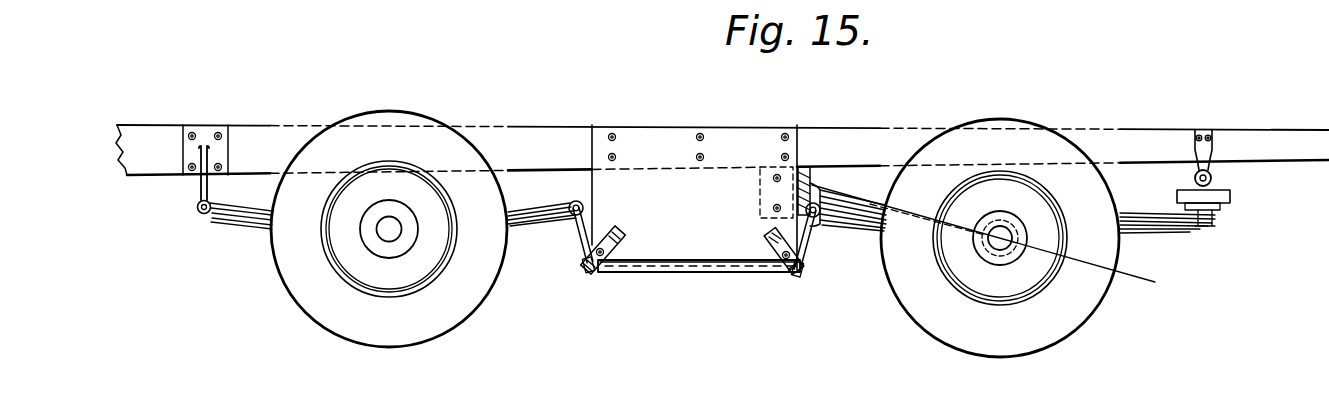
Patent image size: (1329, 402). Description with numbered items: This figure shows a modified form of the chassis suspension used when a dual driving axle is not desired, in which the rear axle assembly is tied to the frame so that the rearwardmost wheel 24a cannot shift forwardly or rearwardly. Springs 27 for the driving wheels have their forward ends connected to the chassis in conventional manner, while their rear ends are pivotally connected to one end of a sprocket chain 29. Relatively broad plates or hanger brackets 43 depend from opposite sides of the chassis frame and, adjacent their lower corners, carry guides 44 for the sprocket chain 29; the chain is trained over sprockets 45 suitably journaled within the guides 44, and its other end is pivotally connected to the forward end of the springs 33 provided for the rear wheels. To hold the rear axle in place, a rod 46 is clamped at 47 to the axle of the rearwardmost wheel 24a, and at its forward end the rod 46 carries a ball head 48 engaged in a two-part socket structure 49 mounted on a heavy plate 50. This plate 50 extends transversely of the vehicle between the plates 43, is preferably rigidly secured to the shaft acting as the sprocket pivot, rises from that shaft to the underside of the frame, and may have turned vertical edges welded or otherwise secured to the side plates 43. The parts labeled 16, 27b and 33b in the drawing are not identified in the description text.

The frame bracket / torque rod line 16 is at (800, 190).
The rearwardmost wheel 24a is at (1014, 350).
The springs 27 is at (528, 218).
The front spring hanger bracket 27b is at (200, 187).
The sprocket chain 29 is at (655, 273).
The springs 33 is at (864, 232).
The rear spring hanger bracket 33b is at (1206, 165).
The hanger brackets 43 is at (713, 242).
The guides 44 is at (590, 272).
The sprockets 45 is at (614, 257).
The rod 46 is at (826, 197).
The clamp 47 is at (1000, 256).
The ball head 48 is at (816, 187).
The two-part socket structure 49 is at (803, 175).
The heavy plate 50 is at (797, 143).